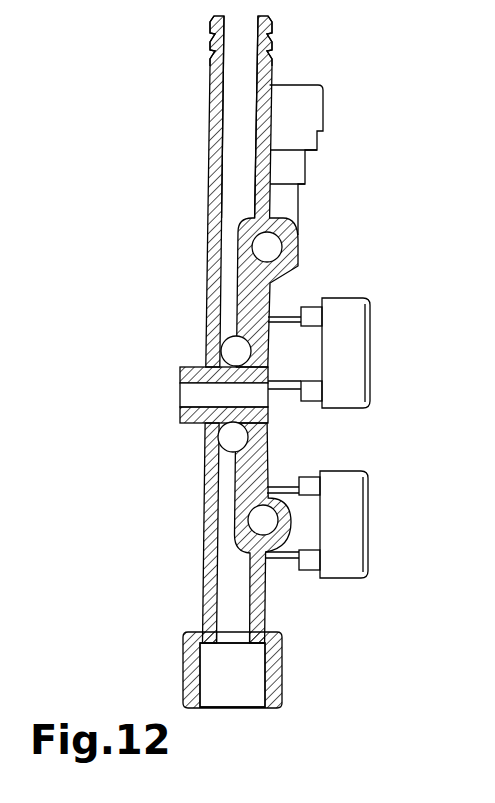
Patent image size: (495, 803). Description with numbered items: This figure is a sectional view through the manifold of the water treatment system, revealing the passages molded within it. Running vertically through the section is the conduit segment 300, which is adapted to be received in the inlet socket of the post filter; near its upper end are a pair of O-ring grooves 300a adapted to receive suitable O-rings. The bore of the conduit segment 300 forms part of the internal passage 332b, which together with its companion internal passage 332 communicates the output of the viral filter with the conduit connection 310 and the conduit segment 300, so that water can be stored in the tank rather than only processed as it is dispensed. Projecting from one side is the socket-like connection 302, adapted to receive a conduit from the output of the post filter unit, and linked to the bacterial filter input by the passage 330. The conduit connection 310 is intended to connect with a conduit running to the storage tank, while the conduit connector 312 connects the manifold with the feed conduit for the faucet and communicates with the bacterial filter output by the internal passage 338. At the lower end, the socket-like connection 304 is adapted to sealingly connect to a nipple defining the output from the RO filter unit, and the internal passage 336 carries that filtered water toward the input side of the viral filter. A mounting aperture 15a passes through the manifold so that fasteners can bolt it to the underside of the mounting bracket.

The conduit segment 300 is at (209, 136).
The O-ring grooves 300a is at (211, 52).
The internal passage 332b is at (238, 100).
The socket-like connection 302 is at (313, 110).
The passage 330 is at (272, 246).
The internal passage 332 is at (236, 352).
The mounting apertures 15a is at (200, 392).
The internal passage 338 is at (271, 509).
The conduit connection 310 is at (352, 356).
The conduit connector 312 is at (348, 522).
The internal passage 336 is at (226, 665).
The socket-like connection 304 is at (279, 674).